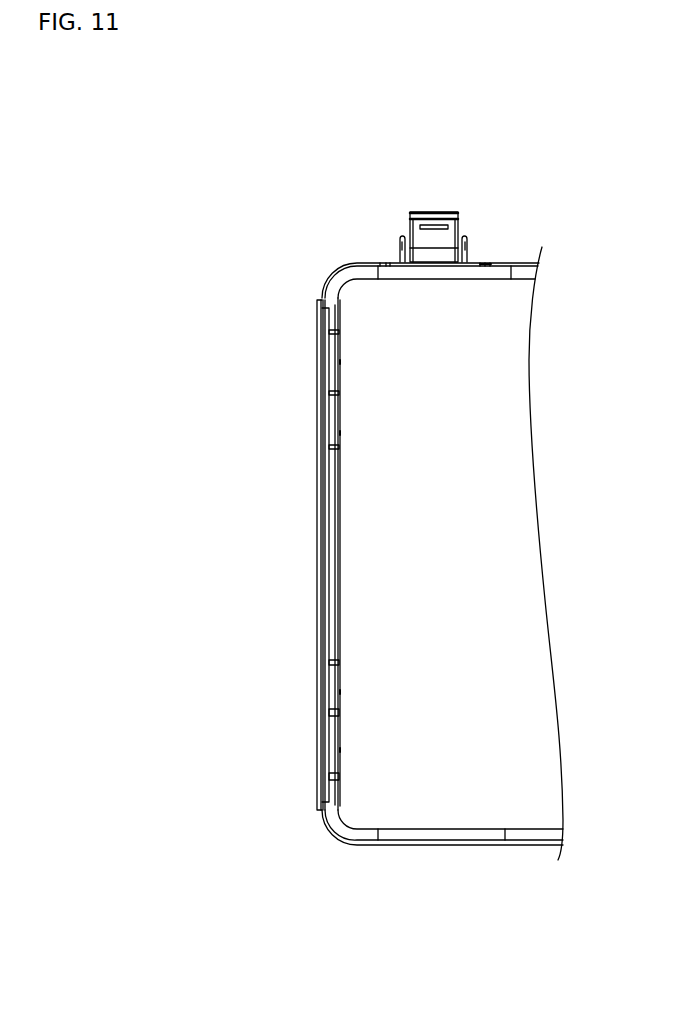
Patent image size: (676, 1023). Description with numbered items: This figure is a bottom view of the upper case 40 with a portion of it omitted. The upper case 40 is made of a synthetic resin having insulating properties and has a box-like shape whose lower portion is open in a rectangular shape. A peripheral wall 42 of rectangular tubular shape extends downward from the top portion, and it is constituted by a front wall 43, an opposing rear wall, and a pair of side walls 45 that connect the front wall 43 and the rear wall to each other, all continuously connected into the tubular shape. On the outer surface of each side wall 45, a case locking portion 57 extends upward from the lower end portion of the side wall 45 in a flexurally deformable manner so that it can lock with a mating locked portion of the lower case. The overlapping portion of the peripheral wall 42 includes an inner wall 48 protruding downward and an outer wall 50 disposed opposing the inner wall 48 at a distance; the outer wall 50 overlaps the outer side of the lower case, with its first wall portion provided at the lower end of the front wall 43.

The upper case 40 is at (363, 128).
The peripheral wall 42 is at (394, 860).
The front wall 43 is at (318, 551).
The side wall 45 is at (546, 845).
The inner wall 48 is at (330, 709).
The outer wall 50 is at (303, 588).
The case locking portion 57 is at (441, 205).